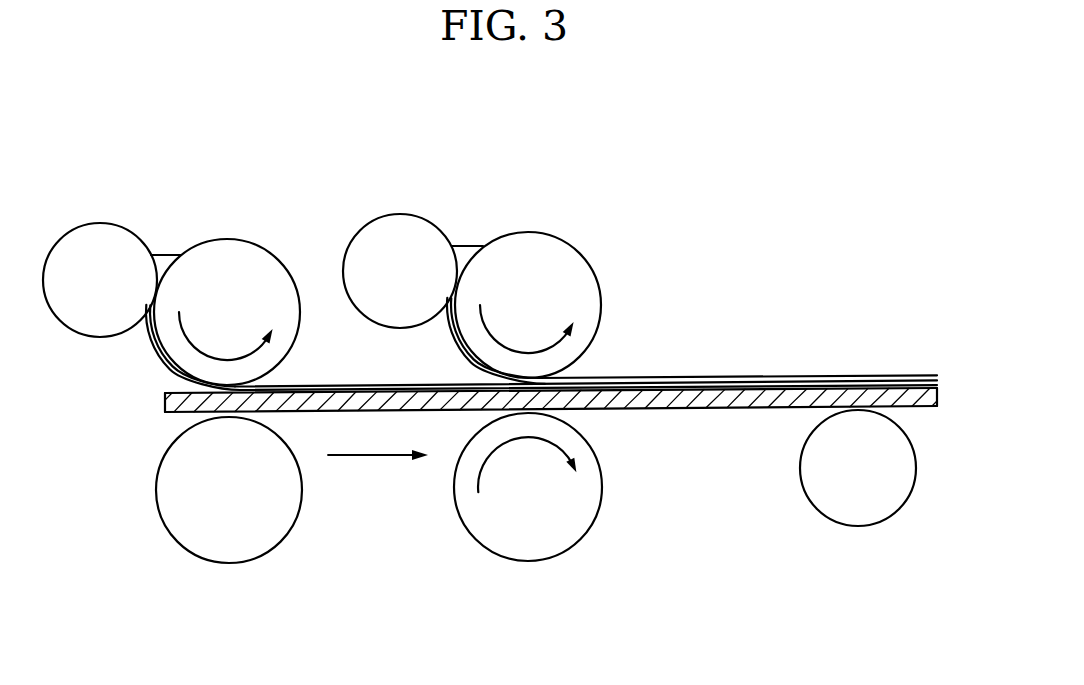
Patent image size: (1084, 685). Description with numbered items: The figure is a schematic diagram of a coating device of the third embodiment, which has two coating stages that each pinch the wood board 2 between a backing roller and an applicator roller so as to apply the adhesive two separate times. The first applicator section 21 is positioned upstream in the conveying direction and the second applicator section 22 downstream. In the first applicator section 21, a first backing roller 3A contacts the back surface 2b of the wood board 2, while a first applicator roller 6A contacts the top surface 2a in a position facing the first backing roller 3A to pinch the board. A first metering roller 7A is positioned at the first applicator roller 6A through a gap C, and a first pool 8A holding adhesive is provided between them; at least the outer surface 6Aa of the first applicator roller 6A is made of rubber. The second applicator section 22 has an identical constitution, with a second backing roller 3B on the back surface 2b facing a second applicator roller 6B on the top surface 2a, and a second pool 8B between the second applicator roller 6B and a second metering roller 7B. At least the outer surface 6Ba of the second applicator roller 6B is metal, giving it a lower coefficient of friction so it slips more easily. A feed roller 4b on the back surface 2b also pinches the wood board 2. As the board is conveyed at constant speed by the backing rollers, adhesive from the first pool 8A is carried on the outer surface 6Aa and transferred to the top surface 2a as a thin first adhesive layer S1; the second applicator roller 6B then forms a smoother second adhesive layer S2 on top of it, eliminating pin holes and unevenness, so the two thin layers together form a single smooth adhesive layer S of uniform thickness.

The first applicator section 21 is at (194, 187).
The second applicator section 22 is at (540, 167).
The first metering roller 7A is at (98, 223).
The first pool 8A is at (167, 254).
The first applicator roller 6A is at (252, 239).
The outer surface of first applicator roller 6Aa is at (150, 340).
The second metering roller 7B is at (372, 222).
The second pool 8B is at (465, 245).
The second applicator roller 6B is at (502, 236).
The outer surface of second applicator roller 6Ba is at (453, 340).
The gap C is at (140, 332).
The first adhesive layer S1 is at (352, 383).
The second adhesive layer S2 is at (873, 377).
The single adhesive layer S is at (937, 283).
The wood board 2 is at (820, 387).
The top surface 2a is at (762, 377).
The back surface 2b is at (695, 407).
The first backing roller 3A is at (270, 551).
The second backing roller 3B is at (579, 540).
The feed roller 4b is at (908, 498).